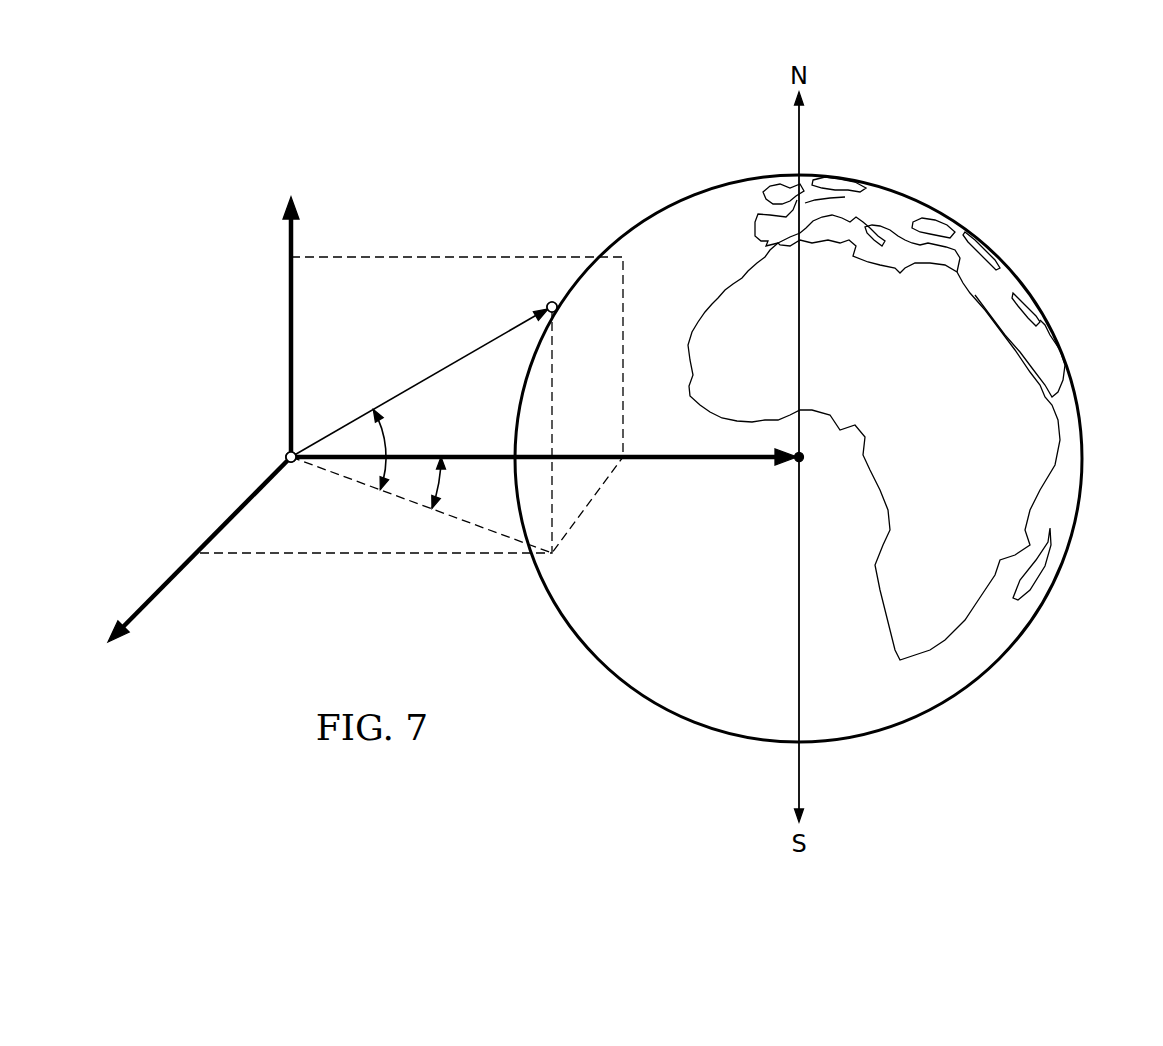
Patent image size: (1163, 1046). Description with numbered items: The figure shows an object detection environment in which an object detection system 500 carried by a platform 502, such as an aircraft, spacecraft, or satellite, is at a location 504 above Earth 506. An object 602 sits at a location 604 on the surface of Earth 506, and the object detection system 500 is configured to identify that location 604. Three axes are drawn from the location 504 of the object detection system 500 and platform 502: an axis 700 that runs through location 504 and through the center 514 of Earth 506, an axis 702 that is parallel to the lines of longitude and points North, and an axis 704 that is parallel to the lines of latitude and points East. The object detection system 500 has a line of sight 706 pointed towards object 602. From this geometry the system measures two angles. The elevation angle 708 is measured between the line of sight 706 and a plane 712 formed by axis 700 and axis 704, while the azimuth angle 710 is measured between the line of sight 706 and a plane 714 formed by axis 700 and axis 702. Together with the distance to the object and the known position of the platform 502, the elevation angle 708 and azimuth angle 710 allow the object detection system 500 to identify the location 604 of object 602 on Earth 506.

The object detection system 500 is at (300, 444).
The platform 502 is at (280, 457).
The location 504 is at (296, 465).
The Earth 506 is at (937, 210).
The center 514 is at (805, 465).
The object 602 is at (545, 304).
The location 604 is at (554, 292).
The axis 700 is at (718, 459).
The axis 702 is at (289, 302).
The axis 704 is at (172, 577).
The line of sight 706 is at (425, 378).
The elevation angle 708 is at (392, 447).
The azimuth angle 710 is at (460, 488).
The plane 712 is at (253, 556).
The plane 714 is at (415, 267).